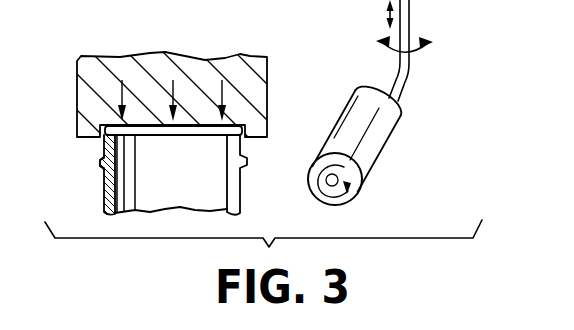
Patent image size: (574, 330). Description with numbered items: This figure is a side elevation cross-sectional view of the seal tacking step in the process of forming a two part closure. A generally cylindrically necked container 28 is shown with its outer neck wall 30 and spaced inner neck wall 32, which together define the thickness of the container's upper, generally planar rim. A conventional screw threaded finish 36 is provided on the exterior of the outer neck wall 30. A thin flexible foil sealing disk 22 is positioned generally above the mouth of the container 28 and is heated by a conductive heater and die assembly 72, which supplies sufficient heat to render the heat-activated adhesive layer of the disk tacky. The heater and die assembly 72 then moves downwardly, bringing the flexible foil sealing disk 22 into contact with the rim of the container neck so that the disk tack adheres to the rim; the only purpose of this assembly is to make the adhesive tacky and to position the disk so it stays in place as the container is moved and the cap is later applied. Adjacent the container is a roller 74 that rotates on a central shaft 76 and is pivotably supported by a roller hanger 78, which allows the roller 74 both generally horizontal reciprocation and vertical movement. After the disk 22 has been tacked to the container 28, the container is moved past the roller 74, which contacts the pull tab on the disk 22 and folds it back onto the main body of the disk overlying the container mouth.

The heater and die assembly 72 is at (77, 92).
The flexible foil sealing disk 22 is at (155, 136).
The outer neck wall 30 is at (104, 190).
The screw threaded finish 36 is at (100, 162).
The inner neck wall 32 is at (118, 166).
The container 28 is at (238, 212).
The roller 74 is at (380, 130).
The central shaft 76 is at (362, 183).
The roller hanger 78 is at (410, 17).